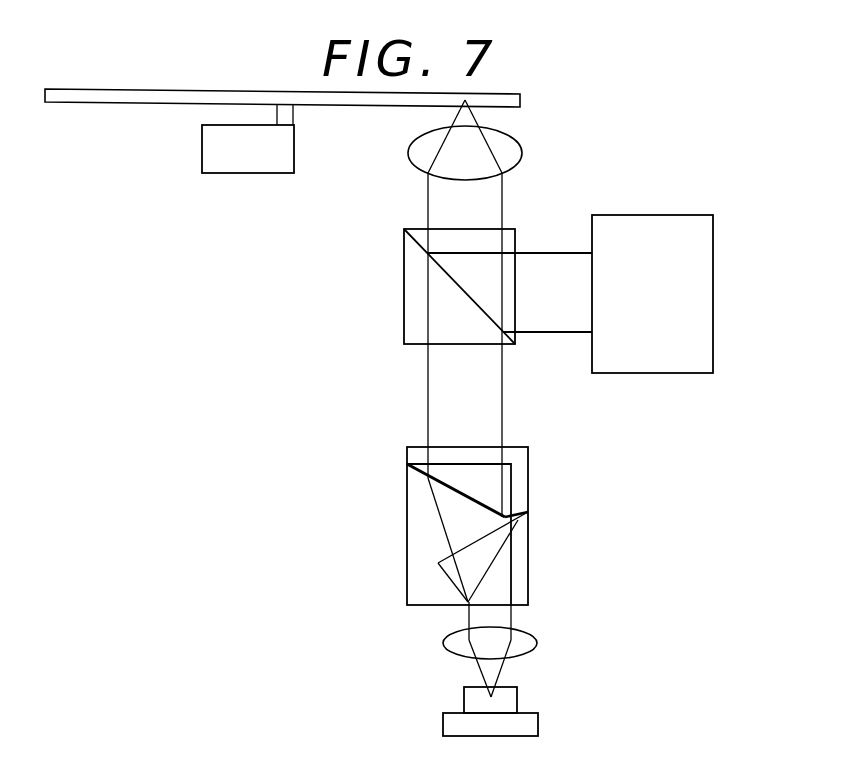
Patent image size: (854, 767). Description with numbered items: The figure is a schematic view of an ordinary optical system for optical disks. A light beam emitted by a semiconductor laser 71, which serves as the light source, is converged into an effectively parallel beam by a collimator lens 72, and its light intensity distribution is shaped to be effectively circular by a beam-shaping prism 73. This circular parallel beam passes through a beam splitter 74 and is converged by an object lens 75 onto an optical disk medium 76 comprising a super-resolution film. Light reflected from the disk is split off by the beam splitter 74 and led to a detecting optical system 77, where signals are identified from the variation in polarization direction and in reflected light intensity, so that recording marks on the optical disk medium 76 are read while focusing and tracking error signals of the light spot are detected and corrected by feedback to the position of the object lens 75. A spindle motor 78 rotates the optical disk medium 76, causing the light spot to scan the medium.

The semiconductor laser 71 is at (507, 697).
The collimator lens 72 is at (537, 645).
The beam-shaping prism 73 is at (489, 483).
The beam splitter 74 is at (405, 310).
The object lens 75 is at (410, 150).
The optical disk medium 76 is at (521, 101).
The detecting optical system 77 is at (713, 300).
The spindle motor 78 is at (205, 150).